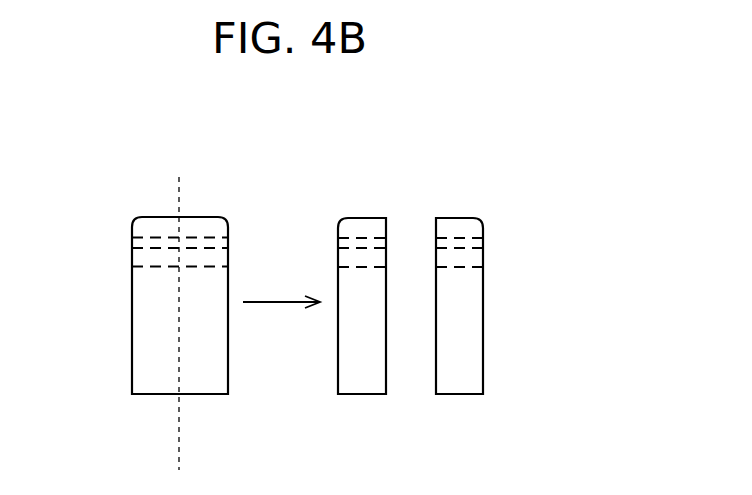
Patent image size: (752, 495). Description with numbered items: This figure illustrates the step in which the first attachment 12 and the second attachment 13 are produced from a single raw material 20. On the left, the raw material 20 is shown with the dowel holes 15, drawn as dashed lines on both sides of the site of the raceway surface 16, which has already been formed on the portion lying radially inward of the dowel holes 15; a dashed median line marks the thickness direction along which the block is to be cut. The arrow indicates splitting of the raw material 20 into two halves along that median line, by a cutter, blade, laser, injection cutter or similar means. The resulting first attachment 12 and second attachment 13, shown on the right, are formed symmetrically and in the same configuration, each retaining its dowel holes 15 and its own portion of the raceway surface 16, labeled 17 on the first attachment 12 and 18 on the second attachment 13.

The first attachment 12 is at (363, 222).
The second attachment 13 is at (458, 221).
The dowel holes 15 is at (140, 237).
The raceway surface 16 is at (140, 266).
The first lower layer portion 17 is at (338, 268).
The second lower layer portion 18 is at (470, 267).
The raw material 20 is at (155, 217).